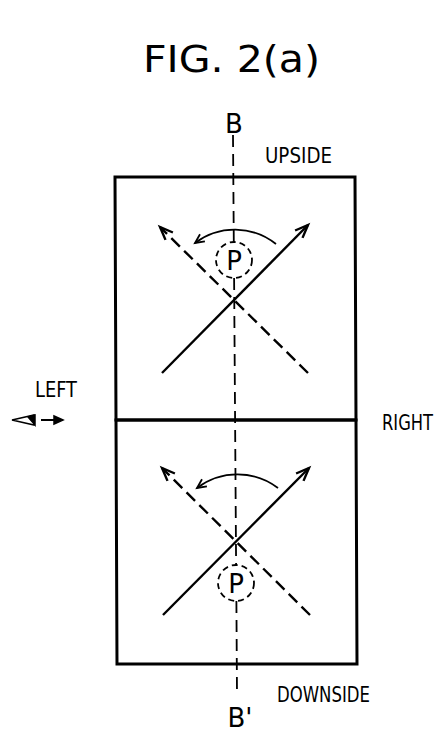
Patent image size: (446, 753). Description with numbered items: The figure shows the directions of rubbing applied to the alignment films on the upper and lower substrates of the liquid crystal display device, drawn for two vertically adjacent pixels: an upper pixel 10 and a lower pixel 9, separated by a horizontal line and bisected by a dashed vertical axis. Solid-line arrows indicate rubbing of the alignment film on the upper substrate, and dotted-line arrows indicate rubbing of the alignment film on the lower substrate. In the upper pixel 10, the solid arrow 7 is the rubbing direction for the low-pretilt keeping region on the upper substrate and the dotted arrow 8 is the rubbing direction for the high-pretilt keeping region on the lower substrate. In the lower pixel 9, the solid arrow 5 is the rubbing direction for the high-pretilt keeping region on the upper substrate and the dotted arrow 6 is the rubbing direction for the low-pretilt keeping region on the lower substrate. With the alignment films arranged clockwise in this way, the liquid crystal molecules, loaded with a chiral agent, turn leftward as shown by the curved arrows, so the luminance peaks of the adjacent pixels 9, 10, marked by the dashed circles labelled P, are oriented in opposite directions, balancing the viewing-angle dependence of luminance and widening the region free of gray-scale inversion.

The direction of rubbing with respect to the high-pretilt keeping region on the uppe 5 is at (277, 500).
The direction of rubbing with respect to the low-pretilt keeping region on the lower 6 is at (285, 592).
The direction of rubbing with respect to the low-pretilt keeping region on the upper 7 is at (280, 253).
The direction of rubbing with respect to the high-pretilt keeping region on the lowe 8 is at (284, 347).
The lower pixel 9 is at (116, 484).
The upper pixel 10 is at (115, 232).